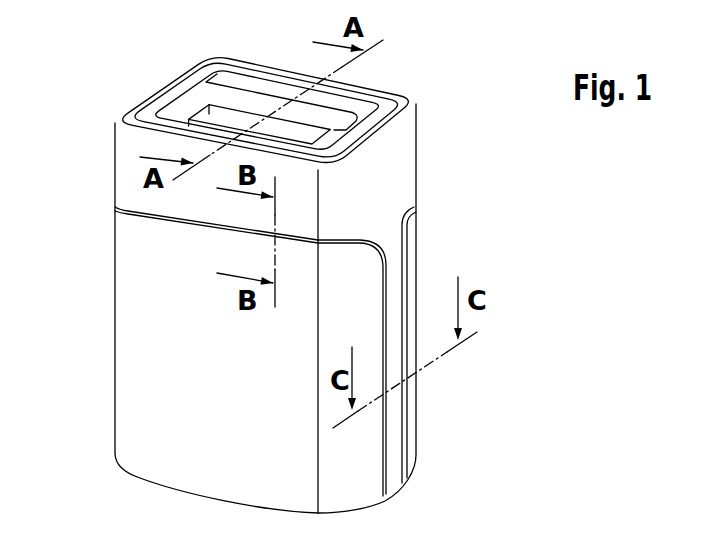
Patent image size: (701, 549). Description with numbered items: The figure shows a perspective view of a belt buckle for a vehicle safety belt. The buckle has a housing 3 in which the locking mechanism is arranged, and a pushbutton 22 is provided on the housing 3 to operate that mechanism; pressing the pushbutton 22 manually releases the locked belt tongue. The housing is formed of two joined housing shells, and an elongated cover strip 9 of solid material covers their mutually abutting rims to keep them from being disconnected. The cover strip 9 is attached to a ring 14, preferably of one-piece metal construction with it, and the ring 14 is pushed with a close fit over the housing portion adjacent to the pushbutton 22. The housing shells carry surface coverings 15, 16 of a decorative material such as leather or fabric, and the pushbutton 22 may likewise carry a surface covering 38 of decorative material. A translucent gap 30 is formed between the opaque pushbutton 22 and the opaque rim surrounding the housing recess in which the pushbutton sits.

The housing 3 is at (434, 258).
The elongated cover strip 9 is at (397, 443).
The ring 14 is at (132, 140).
The surface covering 15 is at (135, 360).
The surface covering 16 is at (413, 403).
The pushbutton 22 is at (242, 103).
The translucent gap 30 is at (343, 92).
The surface covering 38 is at (216, 92).